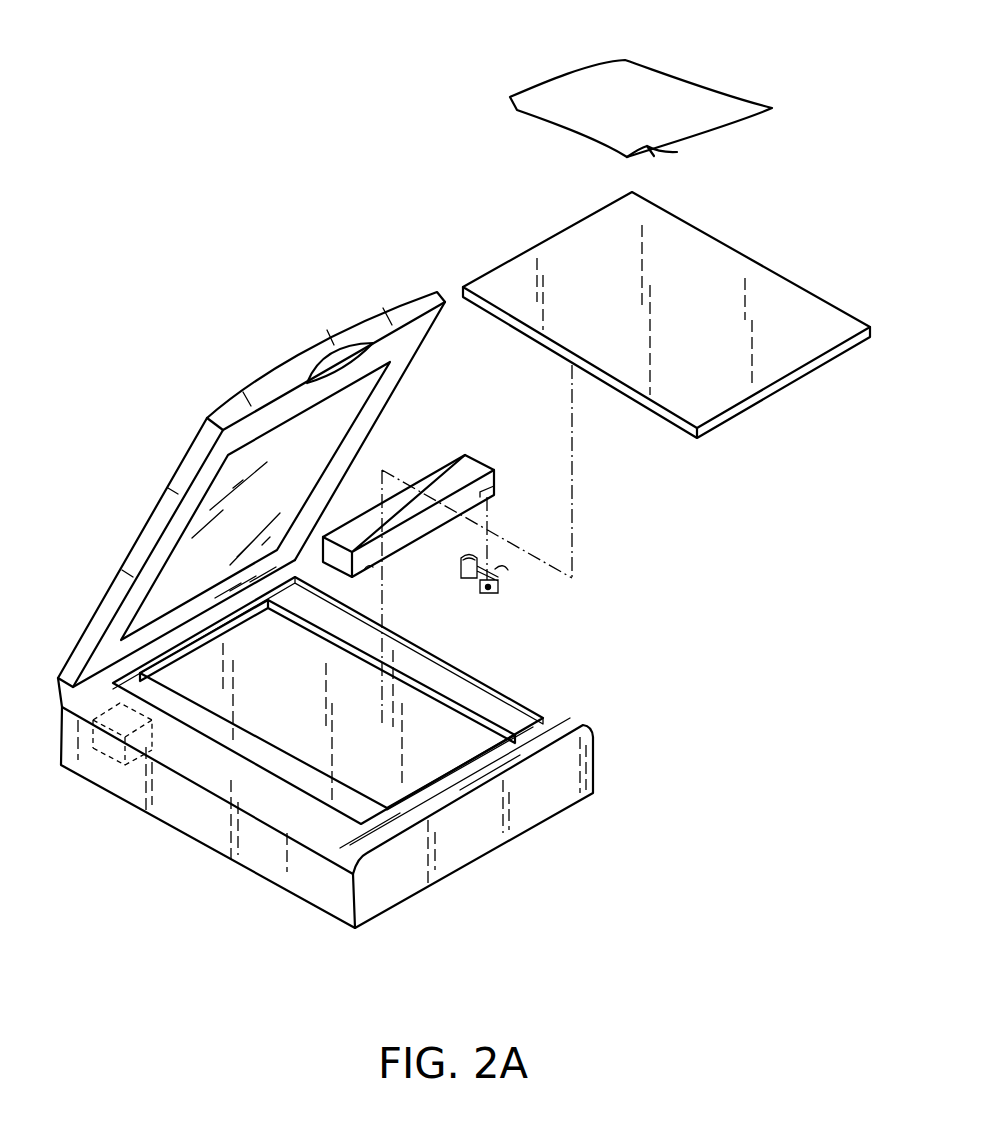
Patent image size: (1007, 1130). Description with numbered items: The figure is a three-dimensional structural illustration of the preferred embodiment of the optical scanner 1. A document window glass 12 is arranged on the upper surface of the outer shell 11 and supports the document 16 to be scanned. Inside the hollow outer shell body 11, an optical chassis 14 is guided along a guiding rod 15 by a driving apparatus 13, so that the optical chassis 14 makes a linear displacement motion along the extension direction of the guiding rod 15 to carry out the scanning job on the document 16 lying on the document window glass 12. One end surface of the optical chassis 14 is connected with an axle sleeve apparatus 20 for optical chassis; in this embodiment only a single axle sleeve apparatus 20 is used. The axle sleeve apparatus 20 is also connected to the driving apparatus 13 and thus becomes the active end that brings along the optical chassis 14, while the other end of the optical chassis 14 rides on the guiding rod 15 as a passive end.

The optical scanner 1 is at (344, 620).
The outer shell 11 is at (562, 712).
The document window glass 12 is at (723, 250).
The driving apparatus 13 is at (110, 747).
The optical chassis 14 is at (427, 483).
The guiding rod 15 is at (415, 680).
The document 16 is at (640, 78).
The axle sleeve apparatus for optical chassis 20 is at (503, 583).